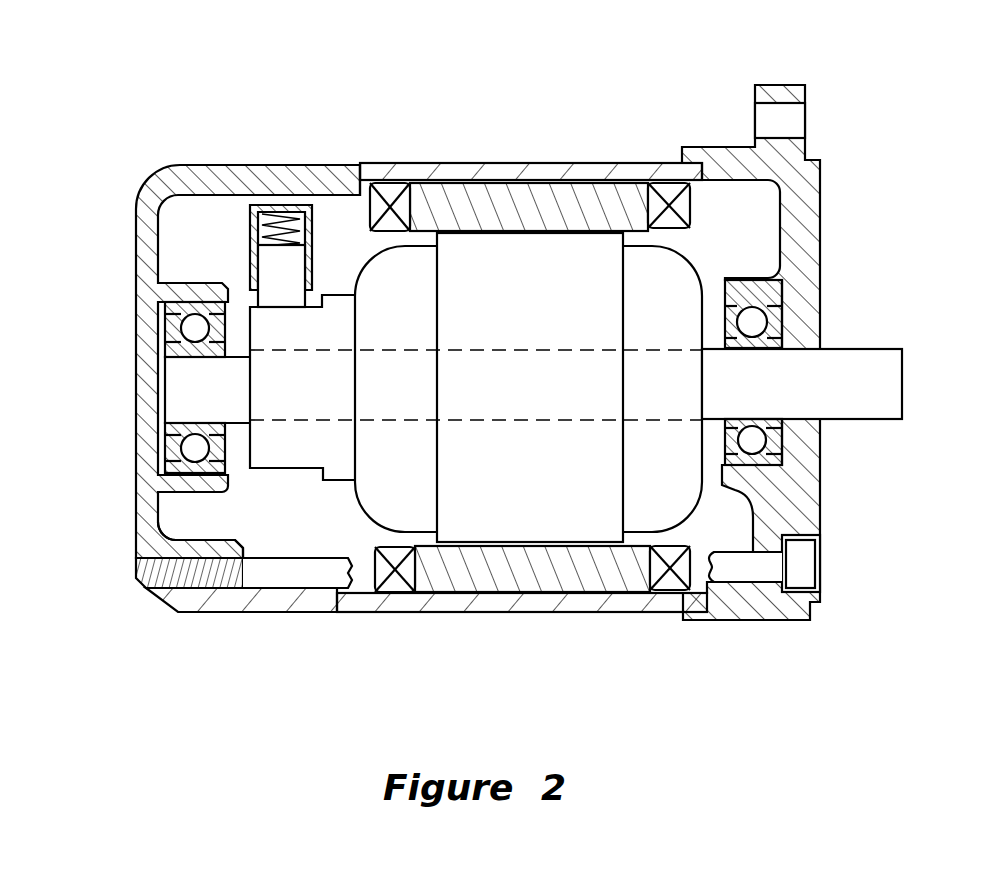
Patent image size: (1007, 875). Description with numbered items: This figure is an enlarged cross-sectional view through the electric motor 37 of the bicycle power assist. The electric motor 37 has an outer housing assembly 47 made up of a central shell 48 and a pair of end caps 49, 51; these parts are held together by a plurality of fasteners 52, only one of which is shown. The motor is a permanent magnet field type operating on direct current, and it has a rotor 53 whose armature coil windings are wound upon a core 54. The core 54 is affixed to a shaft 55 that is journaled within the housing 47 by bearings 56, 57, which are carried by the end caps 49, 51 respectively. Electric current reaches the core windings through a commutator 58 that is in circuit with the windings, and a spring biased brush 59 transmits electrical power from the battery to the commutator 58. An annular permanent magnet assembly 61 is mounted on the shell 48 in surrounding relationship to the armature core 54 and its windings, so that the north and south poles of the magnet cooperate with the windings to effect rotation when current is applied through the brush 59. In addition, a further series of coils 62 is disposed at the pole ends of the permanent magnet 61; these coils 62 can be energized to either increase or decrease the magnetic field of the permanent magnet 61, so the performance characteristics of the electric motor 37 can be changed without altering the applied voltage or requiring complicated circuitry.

The electric motor 37 is at (222, 104).
The outer housing assembly 47 is at (134, 194).
The central shell 48 is at (432, 160).
The end cap 49 is at (705, 148).
The end cap 51 is at (255, 163).
The fastener 52 is at (805, 568).
The rotor 53 is at (358, 497).
The core 54 is at (685, 280).
The shaft 55 is at (868, 420).
The bearing 56 is at (778, 309).
The bearing 57 is at (162, 346).
The commutator 58 is at (273, 468).
The spring biased brush 59 is at (288, 273).
The annular permanent magnet assembly 61 is at (562, 195).
The coils 62 is at (690, 200).